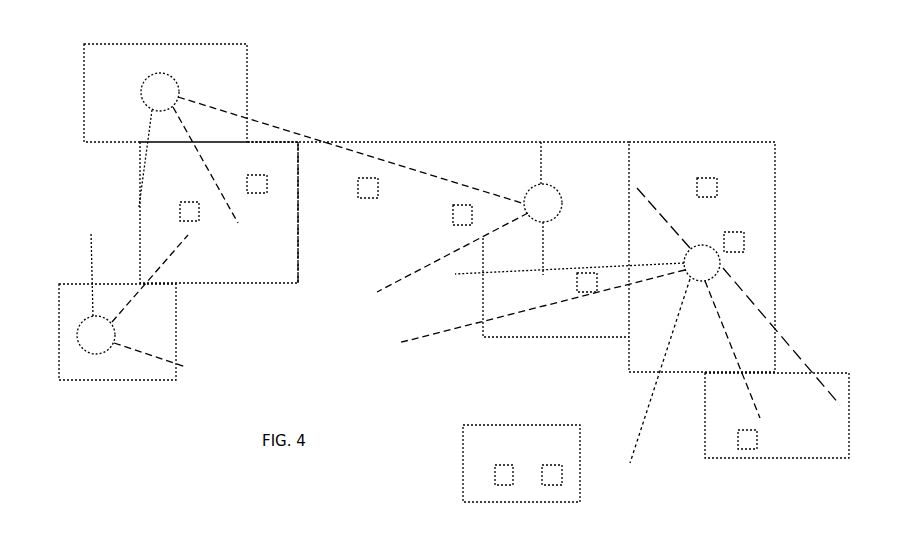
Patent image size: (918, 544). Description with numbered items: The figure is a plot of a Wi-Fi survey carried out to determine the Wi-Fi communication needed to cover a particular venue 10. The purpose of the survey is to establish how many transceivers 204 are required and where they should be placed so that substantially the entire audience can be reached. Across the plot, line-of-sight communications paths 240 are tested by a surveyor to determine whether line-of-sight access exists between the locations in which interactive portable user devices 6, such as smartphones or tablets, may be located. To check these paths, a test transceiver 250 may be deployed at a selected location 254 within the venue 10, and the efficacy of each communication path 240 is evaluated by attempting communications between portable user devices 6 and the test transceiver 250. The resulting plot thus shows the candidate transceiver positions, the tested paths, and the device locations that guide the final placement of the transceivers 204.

The portable device 6 is at (180, 203).
The venue 10 is at (736, 130).
The transceiver 204 is at (143, 80).
The line-of-sight communications path 240 is at (296, 132).
The test transceiver 250 is at (525, 198).
The selected location 254 is at (556, 195).